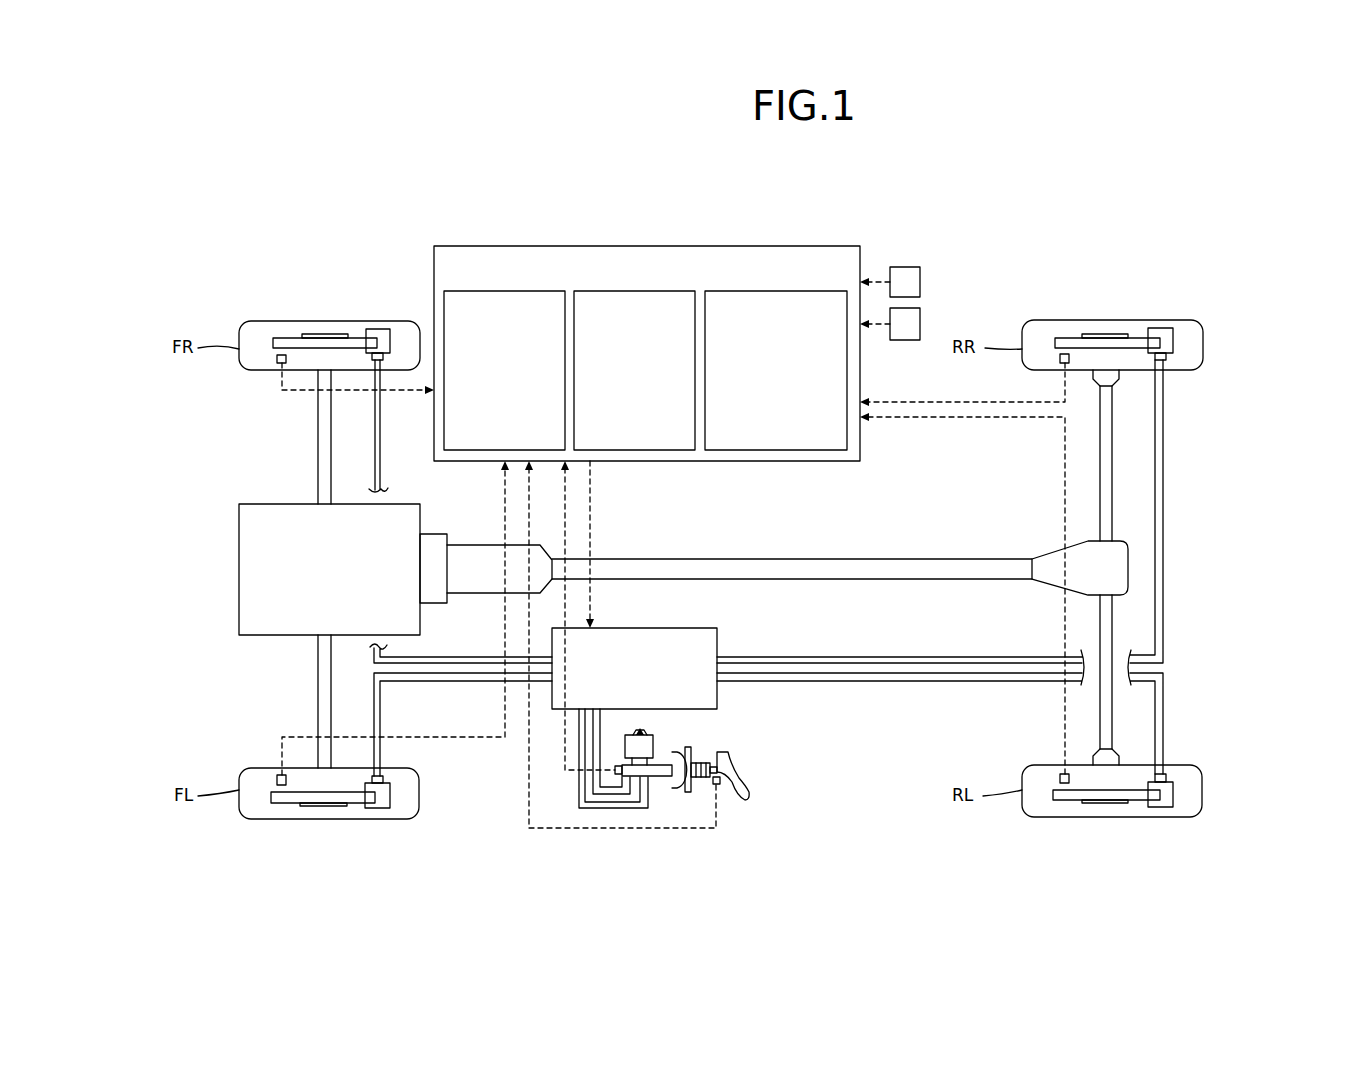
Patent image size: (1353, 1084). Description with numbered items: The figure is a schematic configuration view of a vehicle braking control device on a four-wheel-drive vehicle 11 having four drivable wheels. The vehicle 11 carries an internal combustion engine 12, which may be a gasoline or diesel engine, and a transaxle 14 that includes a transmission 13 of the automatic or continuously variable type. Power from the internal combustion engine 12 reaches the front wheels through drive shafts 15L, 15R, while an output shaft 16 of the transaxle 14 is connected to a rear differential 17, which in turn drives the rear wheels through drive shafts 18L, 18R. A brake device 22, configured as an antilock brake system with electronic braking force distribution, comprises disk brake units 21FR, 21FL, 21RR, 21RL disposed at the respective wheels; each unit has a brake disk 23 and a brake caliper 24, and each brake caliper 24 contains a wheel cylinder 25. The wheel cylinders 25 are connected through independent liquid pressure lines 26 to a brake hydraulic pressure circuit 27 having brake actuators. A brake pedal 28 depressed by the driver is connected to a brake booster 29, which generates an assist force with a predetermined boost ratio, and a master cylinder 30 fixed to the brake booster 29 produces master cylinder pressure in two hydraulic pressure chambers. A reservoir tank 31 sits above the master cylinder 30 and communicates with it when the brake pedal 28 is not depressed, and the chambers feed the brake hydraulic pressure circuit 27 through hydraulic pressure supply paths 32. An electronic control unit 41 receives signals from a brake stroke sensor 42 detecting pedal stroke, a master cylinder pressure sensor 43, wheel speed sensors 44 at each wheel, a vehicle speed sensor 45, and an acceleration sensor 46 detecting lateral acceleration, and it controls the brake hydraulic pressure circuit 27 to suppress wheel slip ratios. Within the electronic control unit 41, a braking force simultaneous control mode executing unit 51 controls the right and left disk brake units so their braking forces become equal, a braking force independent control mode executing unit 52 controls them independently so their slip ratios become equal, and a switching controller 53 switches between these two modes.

The vehicle 11 is at (911, 204).
The internal combustion engine 12 is at (239, 570).
The transmission 13 is at (479, 556).
The transaxle 14 is at (467, 602).
The drive shaft 15R is at (318, 462).
The drive shaft 15L is at (318, 688).
The output shaft 16 is at (812, 565).
The rear differential 17 is at (1106, 568).
The drive shaft 18R is at (1106, 464).
The drive shaft 18L is at (1106, 721).
The disk brake unit 21FR is at (354, 318).
The disk brake unit 21FL is at (354, 822).
The disk brake unit 21RR is at (1138, 318).
The disk brake unit 21RL is at (1135, 821).
The brake device 22 is at (513, 764).
The brake disk 23 is at (278, 340).
The brake caliper 24 is at (380, 330).
The wheel cylinder 25 is at (383, 362).
The liquid pressure line 26 is at (376, 438).
The brake hydraulic pressure circuit 27 is at (717, 640).
The brake pedal 28 is at (731, 762).
The brake booster 29 is at (692, 752).
The master cylinder 30 is at (655, 776).
The reservoir tank 31 is at (652, 740).
The hydraulic pressure supply path 32 is at (586, 780).
The electronic control unit 41 is at (553, 246).
The brake stroke sensor 42 is at (717, 786).
The master cylinder pressure sensor 43 is at (620, 774).
The wheel speed sensor 44 is at (277, 360).
The vehicle speed sensor 45 is at (921, 280).
The acceleration sensor 46 is at (921, 321).
The braking force simultaneous control mode executing unit 51 is at (538, 291).
The braking force independent control mode executing unit 52 is at (781, 291).
The switching controller 53 is at (658, 291).